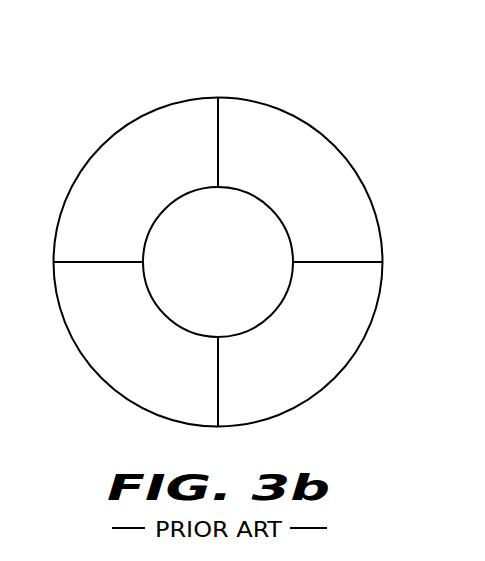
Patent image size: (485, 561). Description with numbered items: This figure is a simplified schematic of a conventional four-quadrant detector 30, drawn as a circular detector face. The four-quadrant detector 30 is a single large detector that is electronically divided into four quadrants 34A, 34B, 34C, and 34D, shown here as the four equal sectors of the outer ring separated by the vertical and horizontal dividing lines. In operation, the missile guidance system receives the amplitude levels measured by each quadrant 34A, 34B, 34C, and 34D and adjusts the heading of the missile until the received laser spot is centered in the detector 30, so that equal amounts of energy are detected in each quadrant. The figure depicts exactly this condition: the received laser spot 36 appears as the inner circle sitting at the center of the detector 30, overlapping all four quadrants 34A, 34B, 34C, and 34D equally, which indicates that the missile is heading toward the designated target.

The four-quadrant detector 30 is at (313, 62).
The quadrant 34A is at (108, 165).
The quadrant 34B is at (328, 163).
The quadrant 34C is at (328, 358).
The quadrant 34D is at (108, 360).
The received laser spot 36 is at (190, 313).